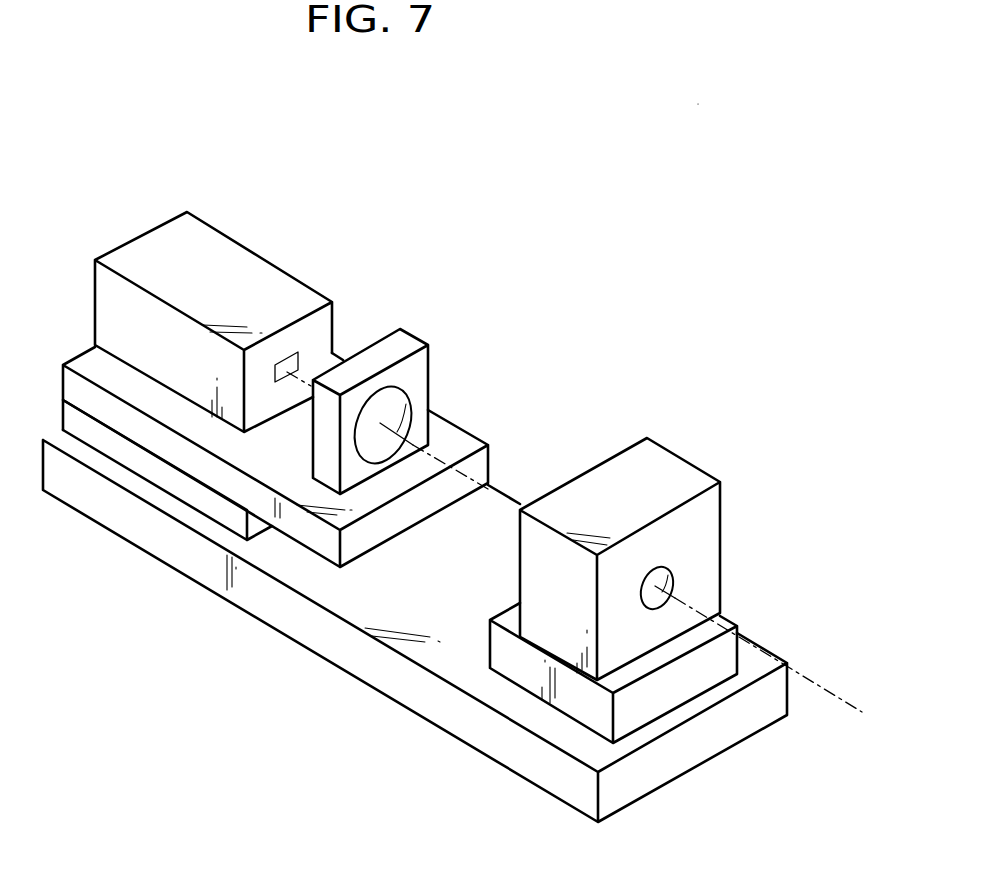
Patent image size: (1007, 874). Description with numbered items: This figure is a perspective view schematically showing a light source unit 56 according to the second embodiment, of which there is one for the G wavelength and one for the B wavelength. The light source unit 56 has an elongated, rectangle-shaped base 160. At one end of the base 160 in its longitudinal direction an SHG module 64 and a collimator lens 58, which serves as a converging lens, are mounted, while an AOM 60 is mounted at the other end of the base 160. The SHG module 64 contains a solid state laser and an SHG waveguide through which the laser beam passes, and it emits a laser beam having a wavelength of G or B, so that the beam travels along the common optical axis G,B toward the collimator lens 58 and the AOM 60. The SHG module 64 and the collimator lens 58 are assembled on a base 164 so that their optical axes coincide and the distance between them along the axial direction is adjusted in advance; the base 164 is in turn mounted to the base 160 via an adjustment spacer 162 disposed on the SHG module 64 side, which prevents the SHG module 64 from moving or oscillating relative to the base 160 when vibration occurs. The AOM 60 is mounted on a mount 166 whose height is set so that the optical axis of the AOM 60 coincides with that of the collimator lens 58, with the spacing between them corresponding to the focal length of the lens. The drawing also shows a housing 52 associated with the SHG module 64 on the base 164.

The light source unit 56 is at (698, 104).
The light source unit 52 is at (203, 257).
The SHG module 64 is at (302, 292).
The collimator lens 58 is at (417, 410).
The AOM 60 is at (677, 470).
The base 160 is at (347, 657).
The adjustment spacer 162 is at (137, 462).
The base 164 is at (217, 478).
The mount 166 is at (723, 650).
The laser beam wavelengths G and B G,B is at (836, 693).